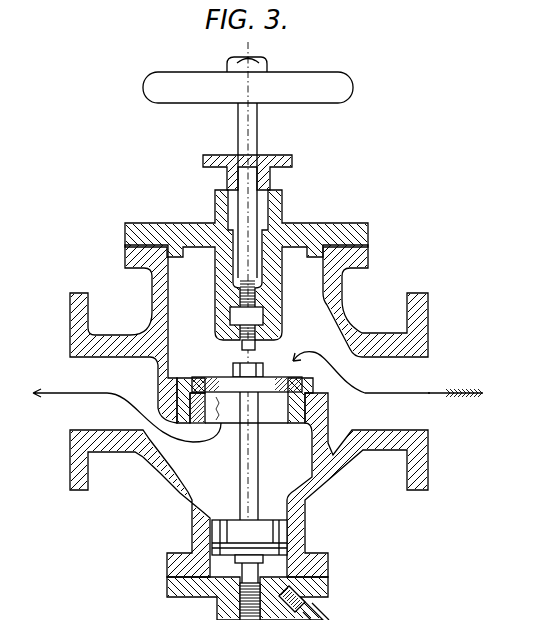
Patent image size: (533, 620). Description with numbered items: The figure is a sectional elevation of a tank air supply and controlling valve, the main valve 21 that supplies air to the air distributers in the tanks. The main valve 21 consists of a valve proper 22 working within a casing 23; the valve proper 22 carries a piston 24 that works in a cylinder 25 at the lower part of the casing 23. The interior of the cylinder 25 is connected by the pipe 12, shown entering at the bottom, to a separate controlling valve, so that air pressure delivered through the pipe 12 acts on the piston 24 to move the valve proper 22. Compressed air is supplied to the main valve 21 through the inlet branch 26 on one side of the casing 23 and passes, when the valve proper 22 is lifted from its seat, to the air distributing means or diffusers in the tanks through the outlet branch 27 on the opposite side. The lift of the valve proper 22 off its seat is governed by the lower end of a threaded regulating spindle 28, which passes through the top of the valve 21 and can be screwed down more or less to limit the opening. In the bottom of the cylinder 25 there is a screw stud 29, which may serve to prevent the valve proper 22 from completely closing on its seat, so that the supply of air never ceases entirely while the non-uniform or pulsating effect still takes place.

The pipe 12 is at (328, 619).
The main valve 21 is at (249, 390).
The valve proper 22 is at (222, 390).
The casing 23 is at (343, 310).
The piston 24 is at (223, 531).
The cylinder 25 is at (293, 528).
The inlet branch 26 is at (418, 370).
The outlet branch 27 is at (78, 414).
The threaded regulating spindle 28 is at (241, 123).
The screw stud 29 is at (240, 609).